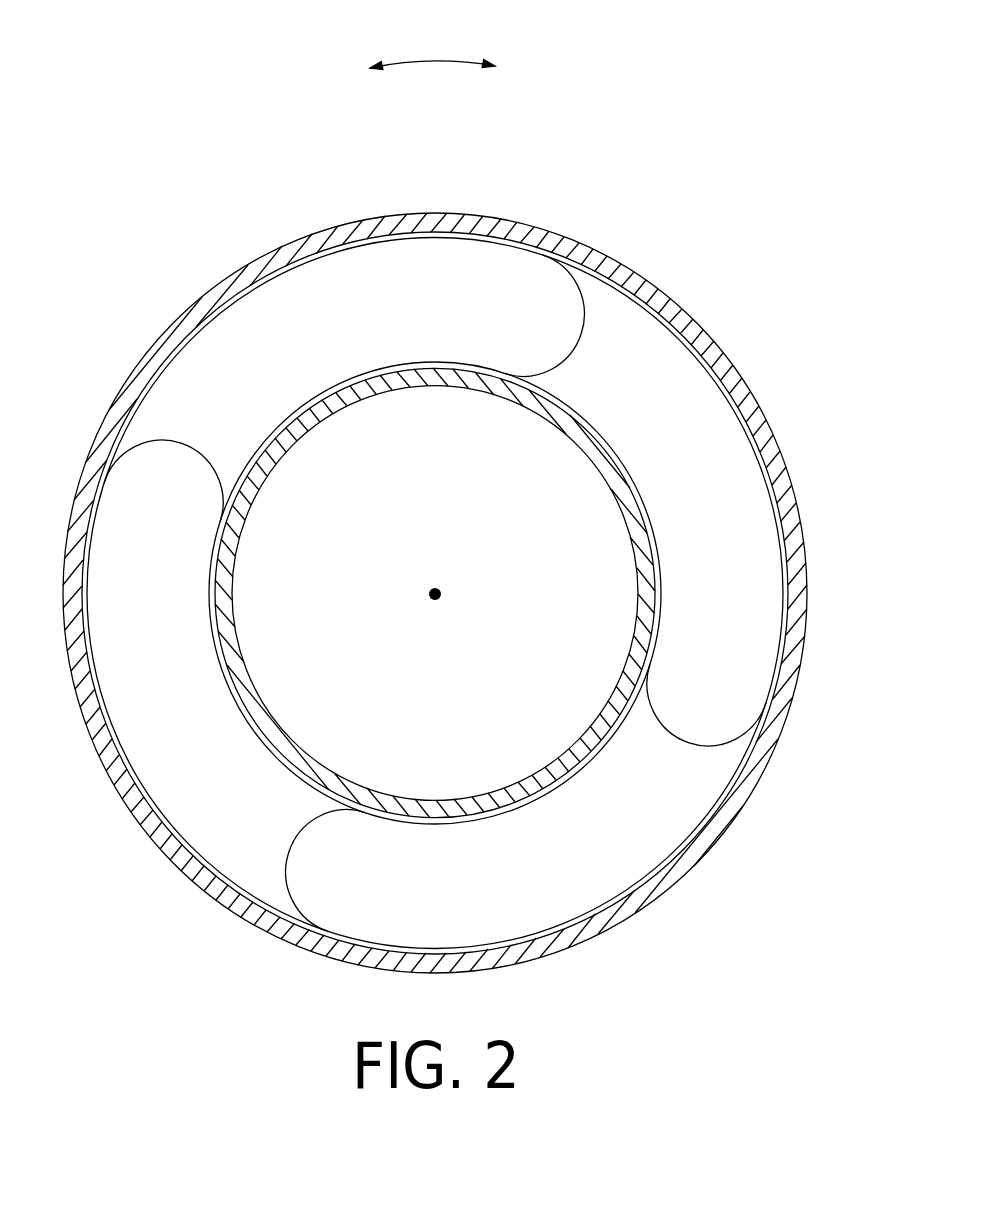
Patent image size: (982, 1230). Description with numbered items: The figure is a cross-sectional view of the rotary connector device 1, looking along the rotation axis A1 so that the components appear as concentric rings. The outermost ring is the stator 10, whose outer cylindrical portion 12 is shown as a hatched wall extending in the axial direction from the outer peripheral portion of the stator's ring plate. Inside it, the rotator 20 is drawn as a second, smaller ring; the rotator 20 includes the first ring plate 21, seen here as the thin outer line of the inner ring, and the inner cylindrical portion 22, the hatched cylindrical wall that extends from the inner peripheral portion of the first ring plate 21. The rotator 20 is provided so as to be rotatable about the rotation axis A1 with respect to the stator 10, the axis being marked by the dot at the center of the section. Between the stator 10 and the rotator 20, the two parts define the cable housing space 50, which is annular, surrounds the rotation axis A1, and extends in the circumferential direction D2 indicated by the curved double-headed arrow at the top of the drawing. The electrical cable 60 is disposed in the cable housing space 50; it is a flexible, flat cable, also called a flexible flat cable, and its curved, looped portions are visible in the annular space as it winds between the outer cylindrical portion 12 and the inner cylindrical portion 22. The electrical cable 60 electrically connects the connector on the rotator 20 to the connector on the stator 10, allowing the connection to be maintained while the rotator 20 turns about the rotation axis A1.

The rotary connector device 1 is at (634, 168).
The stator 10 is at (435, 587).
The outer cylindrical portion 12 is at (695, 320).
The rotator 20 is at (421, 593).
The first ring plate 21 is at (182, 668).
The inner cylindrical portion 22 is at (230, 588).
The cable housing space 50 is at (318, 296).
The electrical cable 60 is at (193, 433).
The rotation axis A1 is at (437, 603).
The circumferential direction D2 is at (432, 60).